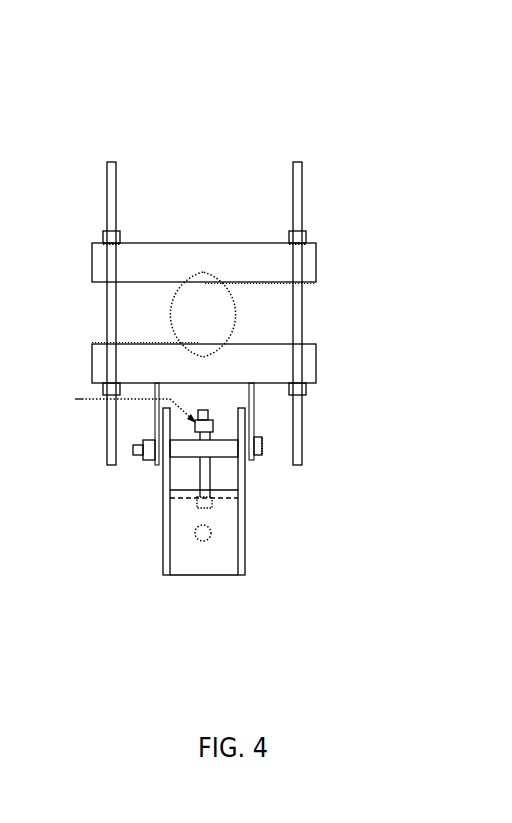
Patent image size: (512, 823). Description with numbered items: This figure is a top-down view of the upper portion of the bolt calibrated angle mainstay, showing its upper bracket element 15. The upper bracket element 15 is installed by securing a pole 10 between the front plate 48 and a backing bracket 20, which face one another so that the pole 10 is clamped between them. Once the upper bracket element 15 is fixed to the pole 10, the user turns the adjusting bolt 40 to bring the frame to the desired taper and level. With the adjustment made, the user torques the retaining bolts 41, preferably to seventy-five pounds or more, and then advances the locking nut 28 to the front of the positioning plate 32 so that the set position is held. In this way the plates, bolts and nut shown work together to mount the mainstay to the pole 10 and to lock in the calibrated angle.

The upper bracket element 15 is at (177, 176).
The backing bracket 20 is at (303, 260).
The front plate 48 is at (305, 366).
The pole 10 is at (236, 317).
The locking nut 28 is at (119, 408).
The positioning plate 32 is at (185, 446).
The retaining bolts 41 is at (258, 459).
The adjusting bolt 40 is at (215, 503).